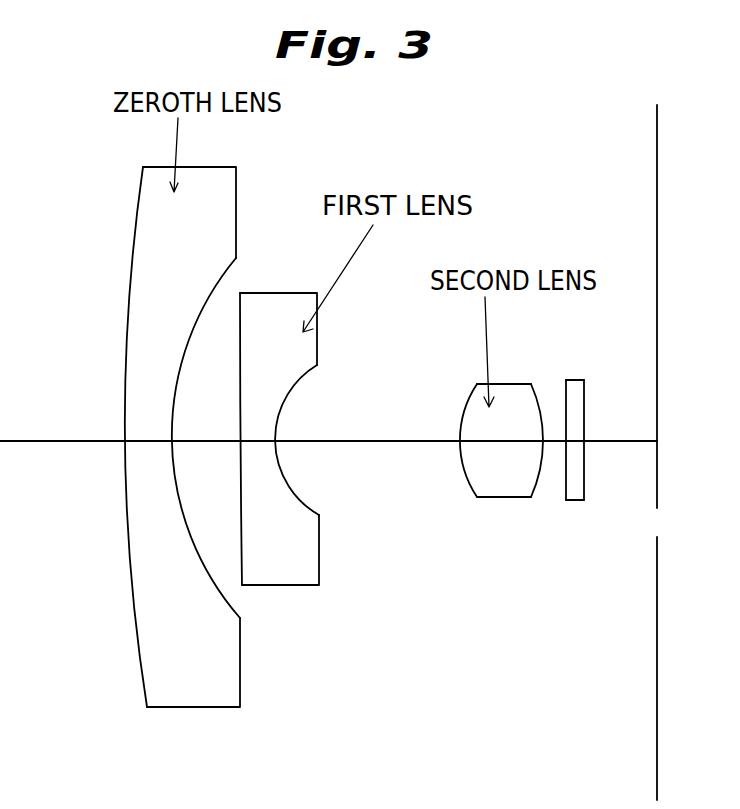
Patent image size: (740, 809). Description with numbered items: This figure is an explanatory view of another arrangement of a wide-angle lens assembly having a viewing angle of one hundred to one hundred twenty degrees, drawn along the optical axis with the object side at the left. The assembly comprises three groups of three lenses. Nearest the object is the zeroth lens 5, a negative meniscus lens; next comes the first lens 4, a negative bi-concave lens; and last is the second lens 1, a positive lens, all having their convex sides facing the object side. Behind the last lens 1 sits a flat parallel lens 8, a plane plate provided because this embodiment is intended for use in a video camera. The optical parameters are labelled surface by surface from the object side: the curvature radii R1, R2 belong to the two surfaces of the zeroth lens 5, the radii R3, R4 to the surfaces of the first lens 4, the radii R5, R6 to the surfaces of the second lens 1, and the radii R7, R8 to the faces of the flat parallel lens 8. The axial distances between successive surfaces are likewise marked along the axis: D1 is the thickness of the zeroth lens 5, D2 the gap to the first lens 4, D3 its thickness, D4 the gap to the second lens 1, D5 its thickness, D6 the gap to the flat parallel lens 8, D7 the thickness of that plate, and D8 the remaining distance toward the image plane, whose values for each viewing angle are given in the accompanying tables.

The second lens 1 is at (479, 438).
The first lens 4 is at (302, 419).
The zeroth lens 5 is at (213, 445).
The flat parallel lens 8 is at (584, 464).
The curvature radius of lens surface R1 is at (133, 246).
The curvature radius of lens surface R2 is at (216, 278).
The curvature radius of lens surface R3 is at (241, 352).
The curvature radius of lens surface R4 is at (293, 391).
The curvature radius of lens surface R5 is at (467, 413).
The curvature radius of lens surface R6 is at (539, 425).
The curvature radius of lens surface R7 is at (564, 412).
The curvature radius of lens surface R8 is at (585, 412).
The distance between lens surfaces D1 is at (145, 443).
The distance between lens surfaces D2 is at (214, 445).
The distance between lens surfaces D3 is at (262, 444).
The distance between lens surfaces D4 is at (373, 445).
The distance between lens surfaces D5 is at (502, 444).
The distance between lens surfaces D6 is at (554, 444).
The distance between lens surfaces D7 is at (575, 444).
The distance between lens surfaces D8 is at (617, 444).